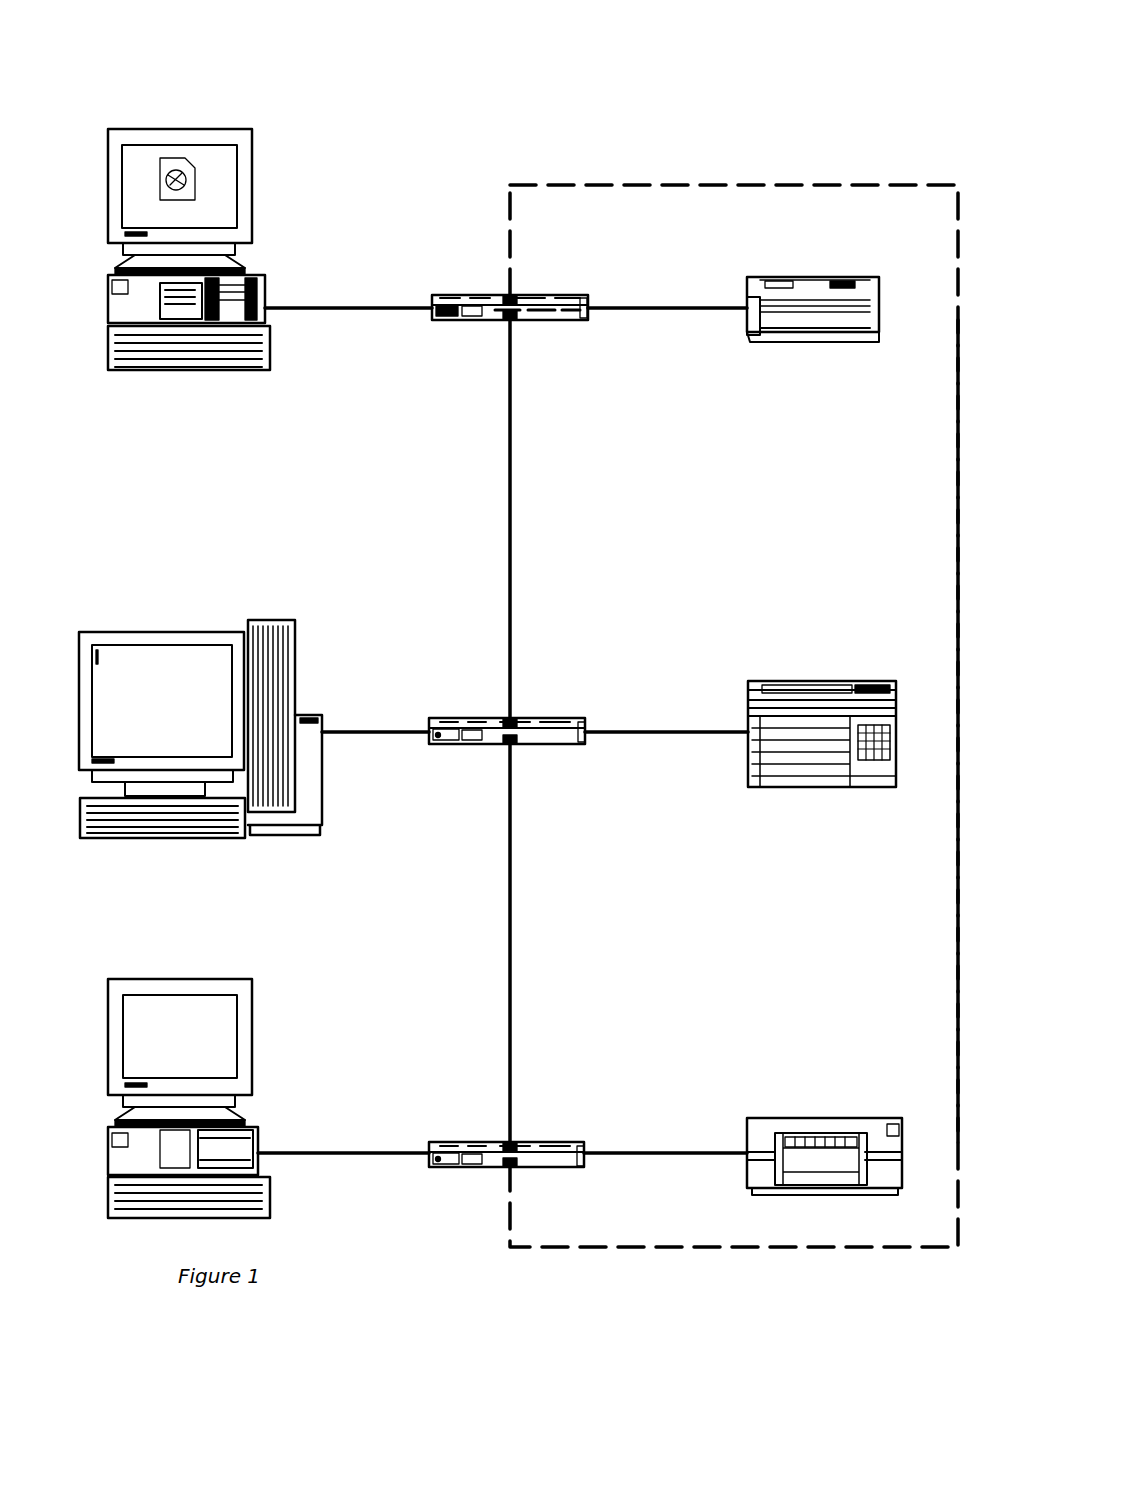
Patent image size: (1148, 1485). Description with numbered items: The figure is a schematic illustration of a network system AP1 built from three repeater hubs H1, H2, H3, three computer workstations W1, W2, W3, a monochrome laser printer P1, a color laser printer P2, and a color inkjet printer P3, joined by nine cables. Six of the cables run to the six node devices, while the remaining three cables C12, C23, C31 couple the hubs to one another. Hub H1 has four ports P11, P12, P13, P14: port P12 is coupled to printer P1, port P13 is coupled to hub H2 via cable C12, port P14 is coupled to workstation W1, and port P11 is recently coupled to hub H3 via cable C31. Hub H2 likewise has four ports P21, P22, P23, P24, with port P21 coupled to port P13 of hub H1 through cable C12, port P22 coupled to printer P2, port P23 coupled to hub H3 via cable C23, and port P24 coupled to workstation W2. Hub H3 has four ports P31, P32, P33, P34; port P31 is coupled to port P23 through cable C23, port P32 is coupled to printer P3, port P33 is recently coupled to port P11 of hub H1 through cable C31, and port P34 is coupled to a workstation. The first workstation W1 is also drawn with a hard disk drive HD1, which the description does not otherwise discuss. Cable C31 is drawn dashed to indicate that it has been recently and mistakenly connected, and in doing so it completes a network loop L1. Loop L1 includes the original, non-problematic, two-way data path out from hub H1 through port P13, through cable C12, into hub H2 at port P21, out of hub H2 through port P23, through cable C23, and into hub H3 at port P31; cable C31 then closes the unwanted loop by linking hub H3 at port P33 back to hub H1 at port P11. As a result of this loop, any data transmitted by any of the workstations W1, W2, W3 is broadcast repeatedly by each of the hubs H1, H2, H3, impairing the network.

The network system AP1 is at (585, 124).
The network loop L1 is at (745, 185).
The computer workstation W1 is at (270, 340).
The computer workstation W2 is at (270, 620).
The computer workstation W3 is at (258, 1160).
The hard disk drive HD1 is at (165, 318).
The repeater hub H1 is at (585, 296).
The repeater hub H2 is at (585, 718).
The repeater hub H3 is at (480, 1142).
The monochrome laser printer P1 is at (855, 285).
The color laser printer P2 is at (820, 680).
The color inkjet printer P3 is at (822, 1118).
The port P11 is at (507, 294).
The port P12 is at (589, 310).
The port P13 is at (513, 322).
The port P14 is at (432, 305).
The port P21 is at (512, 717).
The port P22 is at (587, 733).
The port P23 is at (512, 745).
The port P24 is at (429, 732).
The port P31 is at (512, 1141).
The port P32 is at (590, 1142).
The port P33 is at (512, 1168).
The port P34 is at (429, 1153).
The cable C12 is at (512, 525).
The cable C23 is at (512, 985).
The cable C31 is at (958, 885).